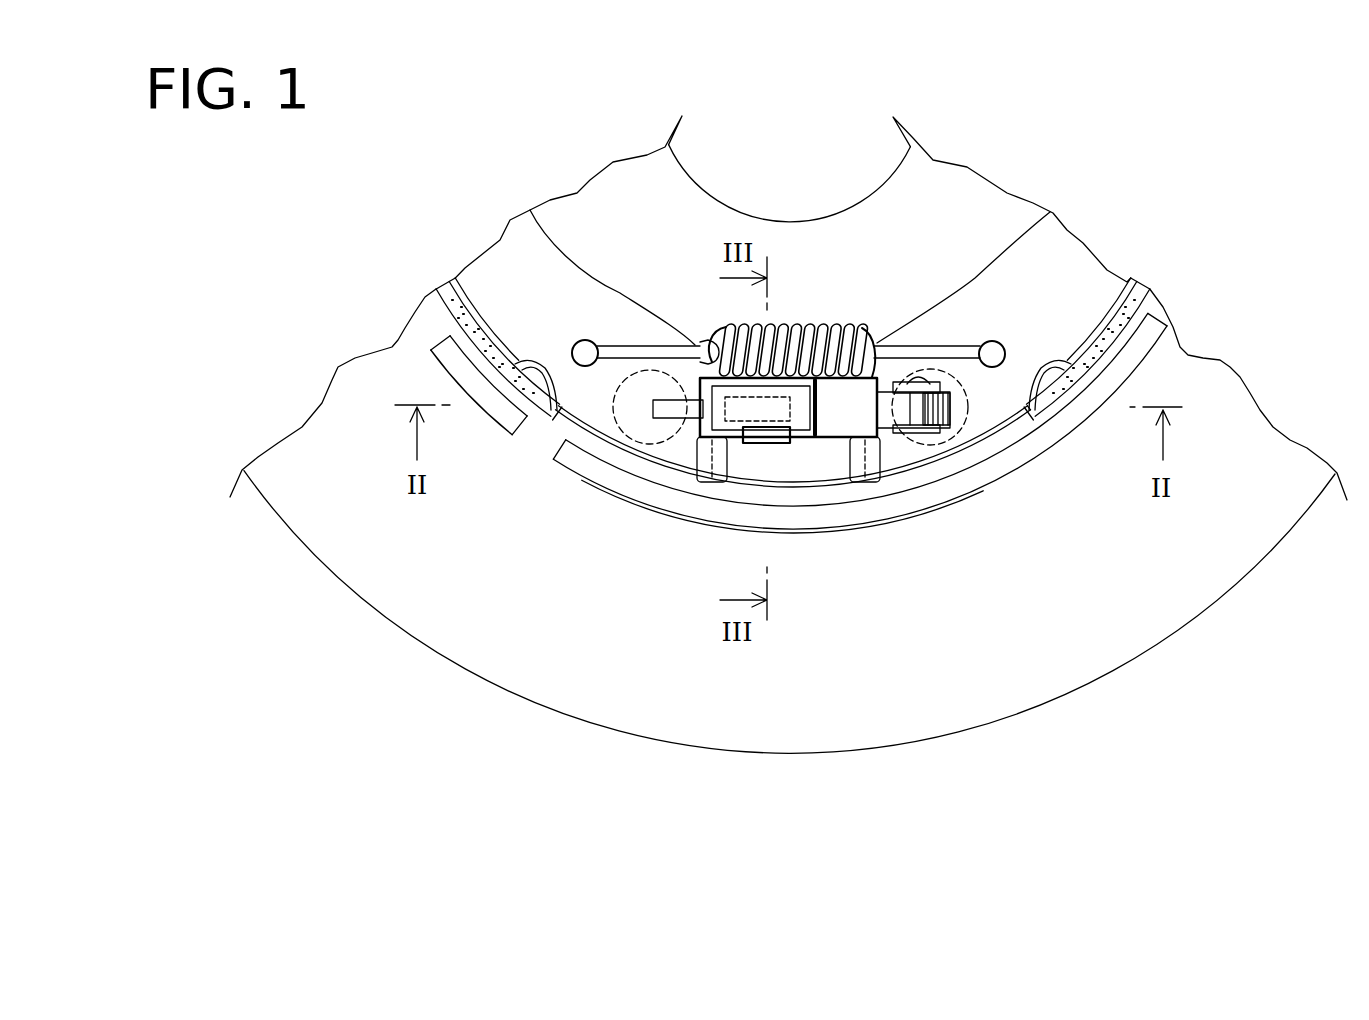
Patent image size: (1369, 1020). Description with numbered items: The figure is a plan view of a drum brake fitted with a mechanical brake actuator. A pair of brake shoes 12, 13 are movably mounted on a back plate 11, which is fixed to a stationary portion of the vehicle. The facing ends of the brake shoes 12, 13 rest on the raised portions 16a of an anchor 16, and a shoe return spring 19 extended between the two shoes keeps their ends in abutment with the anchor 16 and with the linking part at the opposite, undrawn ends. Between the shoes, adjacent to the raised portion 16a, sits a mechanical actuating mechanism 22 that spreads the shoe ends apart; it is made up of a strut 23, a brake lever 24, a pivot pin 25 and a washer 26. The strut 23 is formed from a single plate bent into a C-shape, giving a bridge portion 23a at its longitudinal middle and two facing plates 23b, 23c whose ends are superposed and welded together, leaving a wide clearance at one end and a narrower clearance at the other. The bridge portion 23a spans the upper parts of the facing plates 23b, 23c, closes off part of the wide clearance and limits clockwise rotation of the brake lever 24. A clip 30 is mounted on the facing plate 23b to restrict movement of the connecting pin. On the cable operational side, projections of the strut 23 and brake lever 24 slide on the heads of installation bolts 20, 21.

The back plate 11 is at (413, 597).
The brake shoe 12 is at (434, 340).
The brake shoe 13 is at (1127, 365).
The anchor 16 is at (744, 513).
The raised portion 16a is at (817, 466).
The shoe return spring 19 is at (793, 326).
The installation bolt 20 is at (580, 422).
The installation bolt 21 is at (1007, 423).
The mechanical actuating mechanism 22 is at (797, 485).
The strut 23 is at (873, 343).
The bridge portion 23a is at (850, 455).
The facing plate 23b is at (723, 448).
The facing plate 23c is at (703, 340).
The brake lever 24 is at (958, 413).
The pivot pin 25 is at (920, 370).
The washer 26 is at (940, 345).
The clip 30 is at (766, 445).